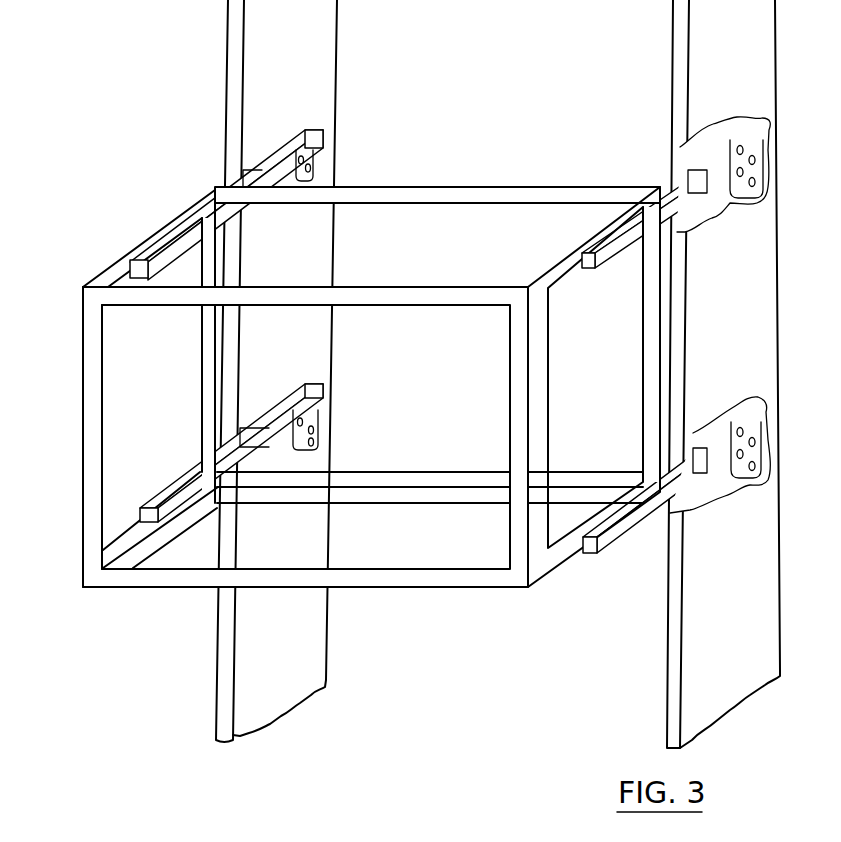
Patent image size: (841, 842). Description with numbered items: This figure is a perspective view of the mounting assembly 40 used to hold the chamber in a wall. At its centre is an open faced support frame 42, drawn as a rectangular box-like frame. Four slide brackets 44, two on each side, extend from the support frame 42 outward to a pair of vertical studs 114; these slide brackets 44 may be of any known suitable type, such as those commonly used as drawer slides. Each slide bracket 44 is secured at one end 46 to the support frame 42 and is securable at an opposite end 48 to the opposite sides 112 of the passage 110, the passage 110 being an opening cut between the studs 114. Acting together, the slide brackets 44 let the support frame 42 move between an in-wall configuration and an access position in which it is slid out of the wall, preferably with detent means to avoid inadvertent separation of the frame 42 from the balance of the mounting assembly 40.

The mounting assembly 40 is at (72, 399).
The support frame 42 is at (90, 458).
The slide brackets 44 is at (174, 243).
The one end 46 is at (138, 269).
The opposite end 48 is at (317, 160).
The passage 110 is at (513, 149).
The opposite sides of the passage 112 is at (253, 340).
The studs 114 is at (305, 69).